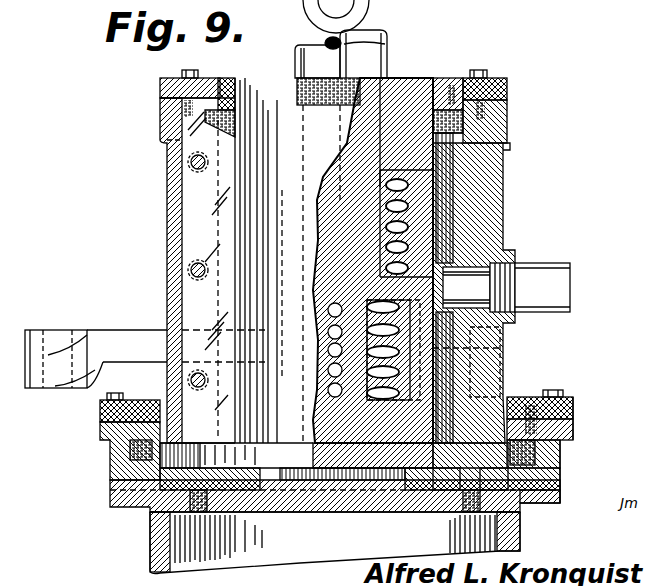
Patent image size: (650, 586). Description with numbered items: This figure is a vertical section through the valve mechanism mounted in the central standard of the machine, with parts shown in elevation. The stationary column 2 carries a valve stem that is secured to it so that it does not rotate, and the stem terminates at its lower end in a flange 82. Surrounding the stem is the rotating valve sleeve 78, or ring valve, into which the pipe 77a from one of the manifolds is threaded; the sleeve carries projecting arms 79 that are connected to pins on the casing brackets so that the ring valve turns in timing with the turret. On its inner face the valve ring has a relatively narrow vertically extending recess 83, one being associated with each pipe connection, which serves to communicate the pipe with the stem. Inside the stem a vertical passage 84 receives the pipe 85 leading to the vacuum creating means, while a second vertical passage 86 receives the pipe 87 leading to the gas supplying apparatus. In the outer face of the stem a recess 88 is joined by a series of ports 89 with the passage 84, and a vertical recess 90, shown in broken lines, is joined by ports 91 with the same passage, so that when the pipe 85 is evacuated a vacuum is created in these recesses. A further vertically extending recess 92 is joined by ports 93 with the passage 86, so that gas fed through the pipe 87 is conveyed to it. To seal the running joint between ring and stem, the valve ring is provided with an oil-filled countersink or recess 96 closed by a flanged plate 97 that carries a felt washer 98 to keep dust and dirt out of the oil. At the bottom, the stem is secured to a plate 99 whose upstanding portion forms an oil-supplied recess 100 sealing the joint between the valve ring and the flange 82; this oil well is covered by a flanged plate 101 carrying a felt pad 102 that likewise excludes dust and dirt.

The column 2 is at (167, 545).
The pipe 77a is at (547, 275).
The valve sleeve 78 is at (507, 190).
The projecting arms 79 is at (117, 345).
The flange 82 is at (163, 458).
The vertically extending recess 83 is at (447, 233).
The passage 84 is at (325, 150).
The pipe 85 is at (300, 67).
The passage 86 is at (408, 90).
The pipe 87 is at (363, 53).
The recess 88 is at (315, 435).
The ports 89 is at (330, 392).
The vertical recess 90 is at (470, 348).
The ports 91 is at (400, 290).
The vertically extending recess 92 is at (510, 143).
The ports 93 is at (397, 201).
The countersink or recess 96 is at (443, 133).
The flanged plate 97 is at (497, 80).
The felt washer 98 is at (443, 85).
The plate 99 is at (558, 458).
The recess 100 is at (560, 440).
The flanged plate 101 is at (568, 398).
The felt pad 102 is at (520, 395).